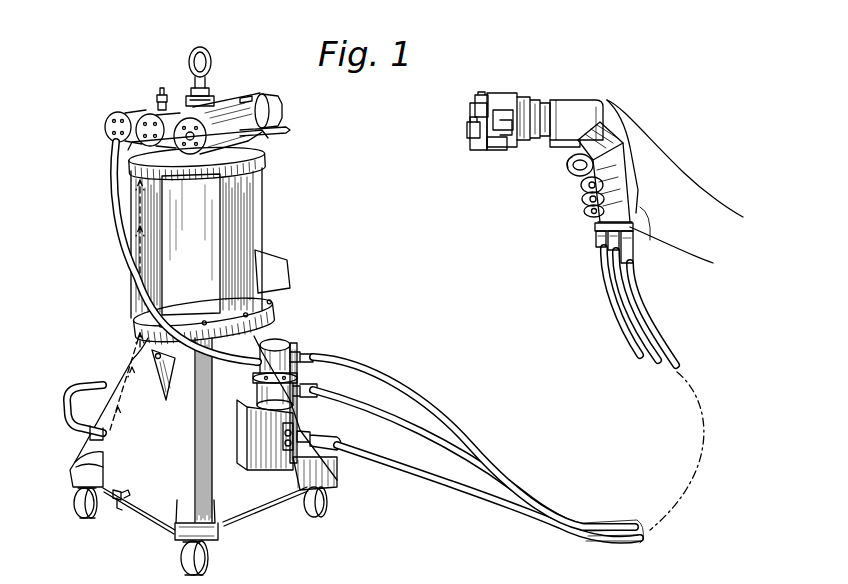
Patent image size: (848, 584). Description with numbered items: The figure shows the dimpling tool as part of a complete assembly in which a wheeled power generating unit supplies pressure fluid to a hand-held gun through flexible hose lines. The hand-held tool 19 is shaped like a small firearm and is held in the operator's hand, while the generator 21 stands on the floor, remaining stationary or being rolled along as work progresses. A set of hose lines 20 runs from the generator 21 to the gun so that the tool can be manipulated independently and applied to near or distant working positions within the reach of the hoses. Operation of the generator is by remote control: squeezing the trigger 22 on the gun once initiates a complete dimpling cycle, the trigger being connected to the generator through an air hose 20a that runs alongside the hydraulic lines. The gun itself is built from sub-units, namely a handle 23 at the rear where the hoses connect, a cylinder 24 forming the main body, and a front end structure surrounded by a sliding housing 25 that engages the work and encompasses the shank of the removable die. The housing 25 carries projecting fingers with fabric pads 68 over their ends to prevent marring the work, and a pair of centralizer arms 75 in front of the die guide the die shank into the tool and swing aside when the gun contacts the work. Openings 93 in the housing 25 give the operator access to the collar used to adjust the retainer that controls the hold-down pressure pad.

The hand-held tool 19 is at (494, 156).
The hose lines 20 is at (403, 444).
The air hose 20a is at (368, 374).
The generator 21 is at (269, 228).
The trigger 22 is at (590, 163).
The handle 23 is at (632, 229).
The cylinder 24 is at (587, 107).
The sliding housing 25 is at (505, 97).
The fabric pad 68 is at (467, 133).
The centralizer arms 75 is at (477, 109).
The openings 93 is at (508, 130).